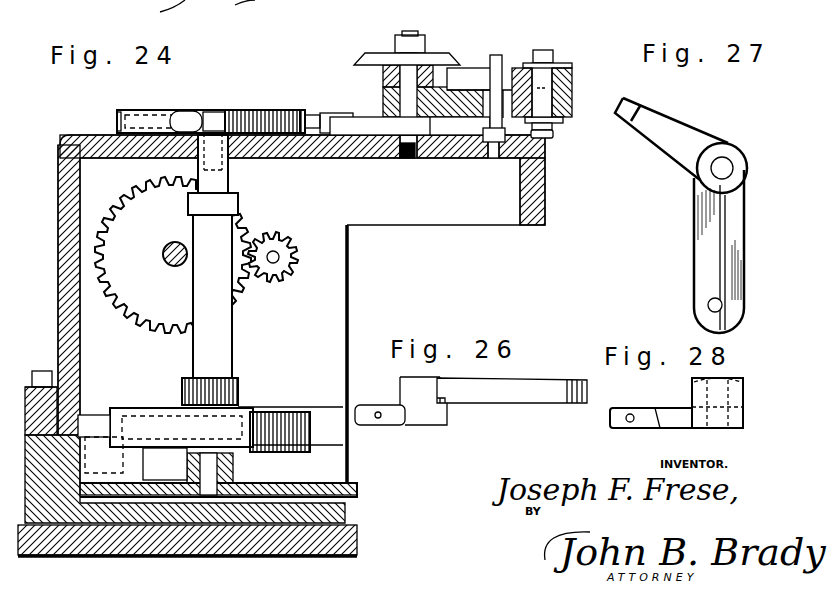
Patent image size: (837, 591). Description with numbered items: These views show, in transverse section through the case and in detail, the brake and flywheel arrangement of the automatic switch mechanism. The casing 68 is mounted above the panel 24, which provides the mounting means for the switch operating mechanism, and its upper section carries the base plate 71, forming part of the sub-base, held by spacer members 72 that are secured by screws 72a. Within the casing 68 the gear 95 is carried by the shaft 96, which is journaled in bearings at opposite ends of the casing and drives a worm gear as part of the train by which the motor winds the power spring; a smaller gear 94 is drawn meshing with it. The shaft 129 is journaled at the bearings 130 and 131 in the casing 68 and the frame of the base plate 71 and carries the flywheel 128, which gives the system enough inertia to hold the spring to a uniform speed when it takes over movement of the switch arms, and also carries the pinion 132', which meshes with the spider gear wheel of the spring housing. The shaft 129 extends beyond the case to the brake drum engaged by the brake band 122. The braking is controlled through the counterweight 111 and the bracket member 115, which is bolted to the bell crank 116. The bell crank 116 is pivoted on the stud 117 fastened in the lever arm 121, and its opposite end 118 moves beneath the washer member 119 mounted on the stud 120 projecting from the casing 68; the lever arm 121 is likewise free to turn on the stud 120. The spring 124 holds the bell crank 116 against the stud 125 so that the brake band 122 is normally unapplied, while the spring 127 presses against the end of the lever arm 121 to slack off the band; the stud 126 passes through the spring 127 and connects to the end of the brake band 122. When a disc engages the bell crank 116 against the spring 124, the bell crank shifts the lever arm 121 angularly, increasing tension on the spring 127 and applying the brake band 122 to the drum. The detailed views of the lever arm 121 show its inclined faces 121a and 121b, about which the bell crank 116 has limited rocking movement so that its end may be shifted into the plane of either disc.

In FIG. 24, the panel 24 is at (347, 530).
In FIG. 24, the casing 68 is at (70, 327).
In FIG. 24, the base plate 71 is at (180, 479).
In FIG. 24, the spacer members 72 is at (100, 415).
In FIG. 24, the screws 72a is at (182, 390).
In FIG. 24, the pinion gear 94 is at (283, 279).
In FIG. 24, the gear 95 is at (146, 240).
In FIG. 24, the shaft 96 is at (167, 263).
In FIG. 24, the counterweight 111 is at (126, 21).
In FIG. 24, the bracket member 115 is at (326, 0).
In FIG. 24, the bell crank 116 is at (580, 81).
In FIG. 24, the stud 117 is at (544, 62).
In FIG. 24, the end of bell crank 118 is at (466, 70).
In FIG. 24, the washer member 119 is at (372, 60).
In FIG. 24, the stud 120 is at (410, 70).
In FIG. 24, the lever arm 121 is at (380, 133).
In FIG. 26, the lever arm 121 is at (492, 400).
In FIG. 27, the lever arm 121 is at (740, 153).
In FIG. 28, the lever arm 121 is at (672, 418).
In FIG. 27, the inclined face 121a is at (743, 255).
In FIG. 27, the inclined face 121b is at (692, 283).
In FIG. 24, the brake band 122 is at (108, 124).
In FIG. 24, the spring 124 is at (562, 136).
In FIG. 24, the stud 125 is at (498, 57).
In FIG. 24, the stud 126 is at (335, 158).
In FIG. 24, the spring 127 is at (357, 120).
In FIG. 24, the flywheel 128 is at (250, 415).
In FIG. 24, the shaft 129 is at (227, 353).
In FIG. 24, the bearing 130 is at (183, 100).
In FIG. 24, the bearing 131 is at (233, 473).
In FIG. 24, the pinion 132' is at (183, 383).